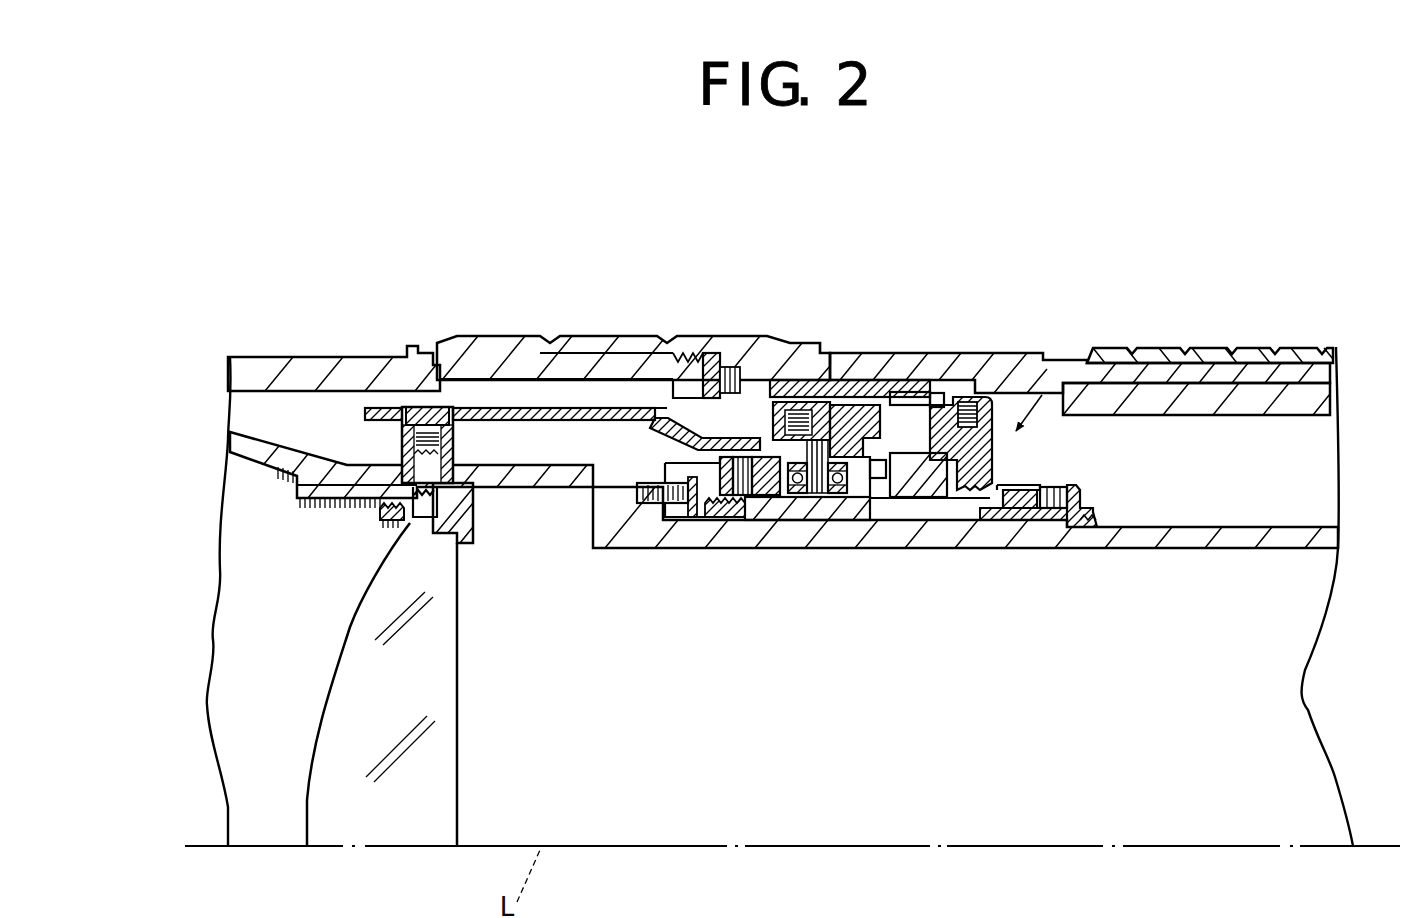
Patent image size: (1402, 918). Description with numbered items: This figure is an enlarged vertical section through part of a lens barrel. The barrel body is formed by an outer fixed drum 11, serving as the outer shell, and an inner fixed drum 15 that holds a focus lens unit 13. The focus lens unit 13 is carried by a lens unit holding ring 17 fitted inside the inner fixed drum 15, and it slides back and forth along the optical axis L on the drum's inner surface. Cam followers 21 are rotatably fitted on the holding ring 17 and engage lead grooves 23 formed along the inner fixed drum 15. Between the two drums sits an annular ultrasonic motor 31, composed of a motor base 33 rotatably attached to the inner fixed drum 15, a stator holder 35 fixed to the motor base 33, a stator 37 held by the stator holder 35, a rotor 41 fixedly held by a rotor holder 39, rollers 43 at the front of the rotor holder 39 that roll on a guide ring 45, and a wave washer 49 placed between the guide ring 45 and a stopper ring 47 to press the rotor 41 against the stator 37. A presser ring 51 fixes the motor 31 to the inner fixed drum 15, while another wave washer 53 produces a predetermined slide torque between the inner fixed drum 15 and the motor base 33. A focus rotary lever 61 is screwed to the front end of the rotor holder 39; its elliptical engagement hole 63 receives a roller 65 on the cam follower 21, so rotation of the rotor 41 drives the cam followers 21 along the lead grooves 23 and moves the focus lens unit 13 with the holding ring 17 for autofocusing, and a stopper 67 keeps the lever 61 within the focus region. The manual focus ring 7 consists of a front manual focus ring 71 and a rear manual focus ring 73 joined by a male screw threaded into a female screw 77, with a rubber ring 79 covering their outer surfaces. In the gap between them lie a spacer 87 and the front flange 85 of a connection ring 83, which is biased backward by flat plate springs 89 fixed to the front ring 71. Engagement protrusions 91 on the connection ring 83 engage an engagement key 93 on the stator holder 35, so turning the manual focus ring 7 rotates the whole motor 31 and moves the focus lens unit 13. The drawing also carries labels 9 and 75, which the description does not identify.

The manual focus ring 7 is at (650, 285).
The camera body side 9 is at (1237, 302).
The outer fixed drum 11 is at (310, 357).
The focus lens unit 13 is at (435, 765).
The inner fixed drum 15 is at (972, 535).
The lens unit holding ring 17 is at (473, 530).
The cam followers 21 is at (453, 445).
The lead grooves 23 is at (465, 477).
The annular ultrasonic motor 31 is at (1080, 362).
The motor base 33 is at (835, 510).
The stator holder 35 is at (990, 450).
The stator 37 is at (920, 490).
The rotor holder 39 is at (876, 500).
The rotor 41 is at (920, 393).
The rollers 43 is at (790, 520).
The guide ring 45 is at (760, 500).
The stopper ring 47 is at (683, 515).
The wave washer 49 is at (713, 517).
The presser ring 51 is at (1085, 530).
The wave washer 53 is at (1068, 485).
The focus rotary lever 61 is at (530, 357).
The elliptical engagement hole 63 is at (385, 405).
The roller 65 is at (407, 405).
The stopper 67 is at (603, 345).
The front manual focus ring 71 is at (502, 360).
The rear manual focus ring 73 is at (790, 400).
The thread 75 is at (680, 353).
The female screw 77 is at (712, 365).
The rubber ring 79 is at (567, 410).
The connection ring 83 is at (870, 385).
The front flange 85 is at (782, 345).
The spacer 87 is at (845, 410).
The flat plate springs 89 is at (732, 378).
The engagement protrusions 91 is at (935, 393).
The engagement key 93 is at (960, 347).